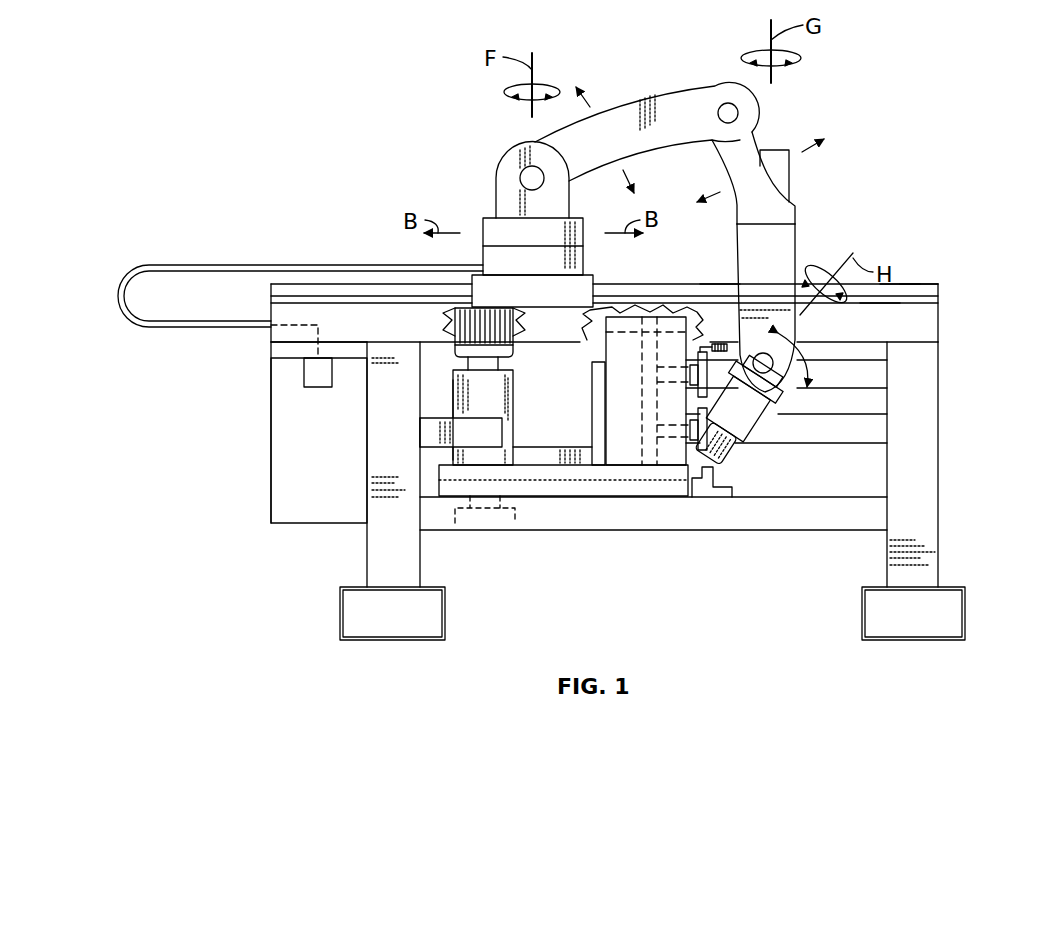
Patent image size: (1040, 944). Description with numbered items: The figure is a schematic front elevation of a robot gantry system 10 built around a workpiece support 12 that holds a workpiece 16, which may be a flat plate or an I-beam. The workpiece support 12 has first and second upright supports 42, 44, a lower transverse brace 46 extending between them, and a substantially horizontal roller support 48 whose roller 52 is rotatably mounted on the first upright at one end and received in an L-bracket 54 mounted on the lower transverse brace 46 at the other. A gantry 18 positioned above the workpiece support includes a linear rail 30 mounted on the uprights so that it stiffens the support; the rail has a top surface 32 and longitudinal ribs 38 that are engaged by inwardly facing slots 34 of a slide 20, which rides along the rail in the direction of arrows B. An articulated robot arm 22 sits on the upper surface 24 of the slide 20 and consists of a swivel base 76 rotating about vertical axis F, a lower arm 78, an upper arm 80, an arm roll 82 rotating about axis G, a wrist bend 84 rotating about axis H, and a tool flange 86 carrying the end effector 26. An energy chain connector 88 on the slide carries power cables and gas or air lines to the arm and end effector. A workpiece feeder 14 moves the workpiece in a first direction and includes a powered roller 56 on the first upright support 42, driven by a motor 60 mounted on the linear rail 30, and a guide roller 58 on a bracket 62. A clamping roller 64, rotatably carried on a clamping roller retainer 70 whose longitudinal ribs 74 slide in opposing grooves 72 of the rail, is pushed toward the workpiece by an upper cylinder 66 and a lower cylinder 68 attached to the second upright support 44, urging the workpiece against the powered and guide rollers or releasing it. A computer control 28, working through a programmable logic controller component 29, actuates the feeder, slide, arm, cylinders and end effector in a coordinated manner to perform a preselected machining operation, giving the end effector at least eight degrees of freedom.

The robot gantry system 10 is at (907, 53).
The workpiece support 12 is at (944, 458).
The workpiece feeder 14 is at (451, 394).
The workpiece 16 is at (560, 447).
The gantry 18 is at (924, 282).
The slide 20 is at (593, 278).
The articulated robot arm 22 is at (650, 96).
The upper surface 24 is at (530, 273).
The end effector 26 is at (727, 452).
The computer control 28 is at (293, 430).
The programmable logic controller component 29 is at (320, 372).
The linear rail 30 is at (940, 325).
The top surface 32 is at (722, 283).
The slot 34 is at (875, 300).
The longitudinal rib 38 is at (895, 288).
The first upright support 42 is at (372, 540).
The second upright support 44 is at (933, 535).
The lower transverse brace 46 is at (812, 505).
The roller support 48 is at (677, 490).
The roller 52 is at (548, 480).
The L-bracket 54 is at (718, 485).
The powered roller 56 is at (497, 380).
The guide roller 58 is at (512, 455).
The motor 60 is at (512, 343).
The bracket 62 is at (433, 445).
The clamping roller 64 is at (600, 465).
The upper cylinder 66 is at (872, 367).
The lower cylinder 68 is at (872, 435).
The clamping roller retainer 70 is at (645, 470).
The grooves 72 is at (585, 328).
The longitudinal ribs 74 is at (648, 302).
The swivel base 76 is at (583, 222).
The lower arm 78 is at (590, 133).
The upper arm 80 is at (787, 207).
The arm roll 82 is at (783, 250).
The wrist bend 84 is at (785, 392).
The tool flange 86 is at (753, 422).
The energy chain connector 88 is at (181, 264).